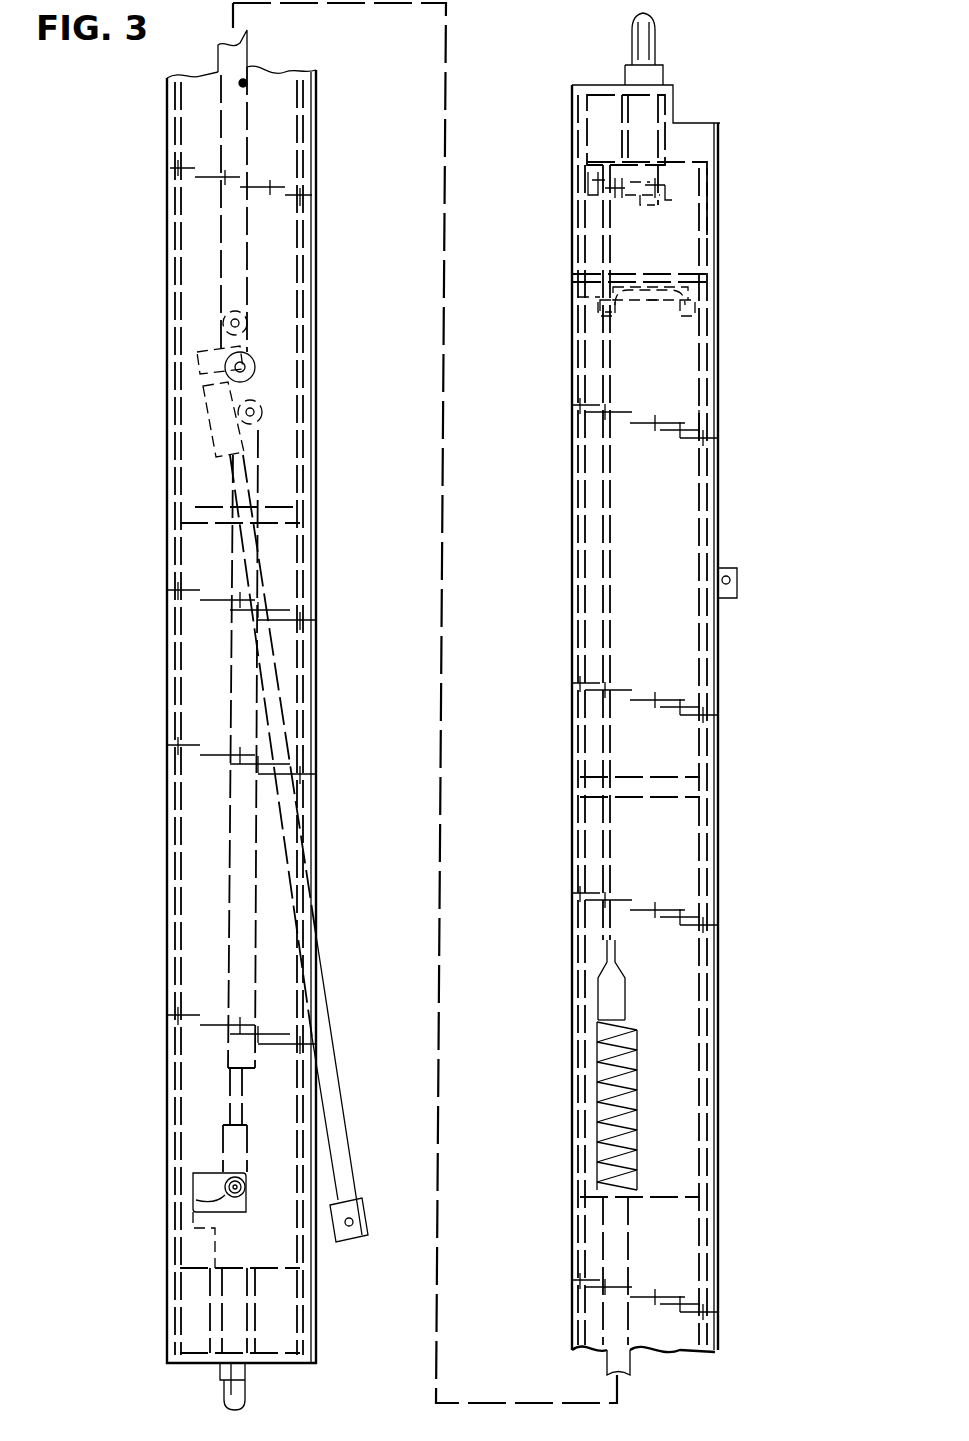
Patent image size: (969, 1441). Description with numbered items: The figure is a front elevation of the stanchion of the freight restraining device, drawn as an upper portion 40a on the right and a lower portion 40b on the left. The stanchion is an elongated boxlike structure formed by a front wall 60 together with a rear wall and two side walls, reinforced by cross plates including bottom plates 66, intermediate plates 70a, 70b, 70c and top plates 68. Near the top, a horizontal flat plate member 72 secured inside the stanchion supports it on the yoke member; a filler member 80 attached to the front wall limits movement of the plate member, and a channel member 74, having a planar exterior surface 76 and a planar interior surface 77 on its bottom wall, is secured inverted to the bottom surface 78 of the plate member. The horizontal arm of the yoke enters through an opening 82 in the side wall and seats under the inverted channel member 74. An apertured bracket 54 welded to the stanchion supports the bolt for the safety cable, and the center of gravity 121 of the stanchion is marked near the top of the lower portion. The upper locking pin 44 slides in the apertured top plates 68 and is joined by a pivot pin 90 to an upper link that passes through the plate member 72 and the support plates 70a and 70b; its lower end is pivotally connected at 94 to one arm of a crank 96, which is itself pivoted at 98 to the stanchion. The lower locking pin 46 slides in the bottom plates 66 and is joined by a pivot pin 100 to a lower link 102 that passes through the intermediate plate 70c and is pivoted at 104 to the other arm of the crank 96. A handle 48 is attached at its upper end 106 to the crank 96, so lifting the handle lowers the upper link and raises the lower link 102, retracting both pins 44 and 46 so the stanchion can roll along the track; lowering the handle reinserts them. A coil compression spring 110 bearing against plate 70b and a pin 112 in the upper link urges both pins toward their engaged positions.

The upper portion 40a is at (722, 685).
The lower portion 40b is at (318, 572).
The upper locking pin 44 is at (655, 32).
The lower locking pin 46 is at (243, 1395).
The handle 48 is at (338, 1103).
The apertured bracket 54 is at (730, 568).
The front wall 60 is at (432, 657).
The bottom plates 66 is at (195, 1267).
The top plates 68 is at (603, 92).
The apertured support plate 70a is at (692, 782).
The apertured support plate 70b is at (705, 1192).
The intermediate apertured supporting plate 70c is at (205, 500).
The horizontal flat plate member 72 is at (668, 272).
The channel member 74 is at (702, 305).
The planar exterior surface 76 is at (640, 285).
The planar interior surface 77 is at (660, 305).
The bottom surface 78 is at (578, 297).
The filler member 80 is at (600, 310).
The opening 82 is at (705, 400).
The pivot pin 90 is at (590, 190).
The pivotal connection 94 is at (246, 319).
The crank 96 is at (258, 376).
The pivotal connection 98 is at (235, 367).
The pivot pin 100 is at (232, 1185).
The lower link 102 is at (258, 948).
The pivotal connection 104 is at (263, 413).
The upper end 106 is at (215, 405).
The coil compression spring 110 is at (597, 1092).
The pin 112 is at (597, 1012).
The center of gravity 121 is at (262, 78).